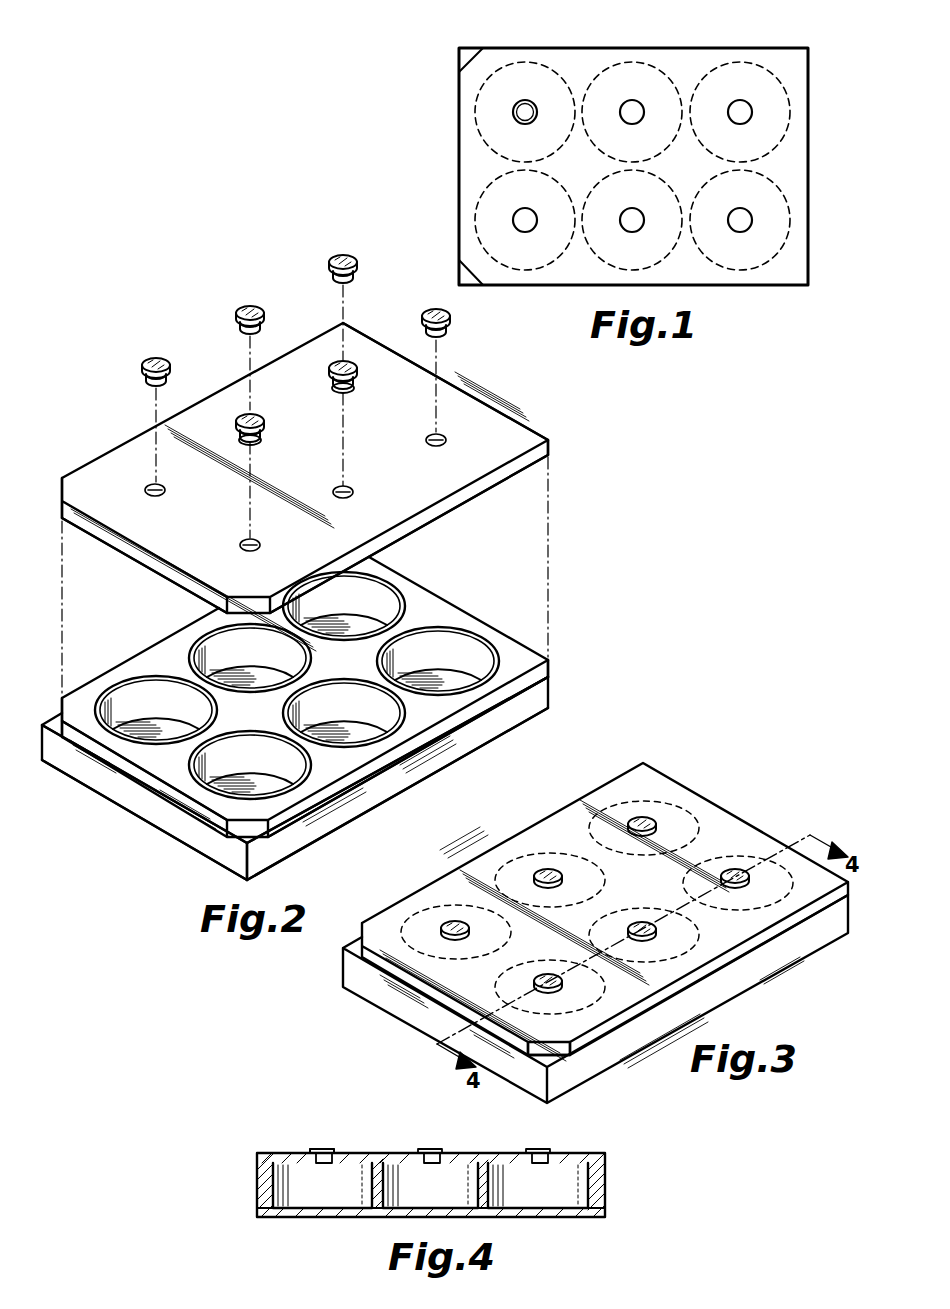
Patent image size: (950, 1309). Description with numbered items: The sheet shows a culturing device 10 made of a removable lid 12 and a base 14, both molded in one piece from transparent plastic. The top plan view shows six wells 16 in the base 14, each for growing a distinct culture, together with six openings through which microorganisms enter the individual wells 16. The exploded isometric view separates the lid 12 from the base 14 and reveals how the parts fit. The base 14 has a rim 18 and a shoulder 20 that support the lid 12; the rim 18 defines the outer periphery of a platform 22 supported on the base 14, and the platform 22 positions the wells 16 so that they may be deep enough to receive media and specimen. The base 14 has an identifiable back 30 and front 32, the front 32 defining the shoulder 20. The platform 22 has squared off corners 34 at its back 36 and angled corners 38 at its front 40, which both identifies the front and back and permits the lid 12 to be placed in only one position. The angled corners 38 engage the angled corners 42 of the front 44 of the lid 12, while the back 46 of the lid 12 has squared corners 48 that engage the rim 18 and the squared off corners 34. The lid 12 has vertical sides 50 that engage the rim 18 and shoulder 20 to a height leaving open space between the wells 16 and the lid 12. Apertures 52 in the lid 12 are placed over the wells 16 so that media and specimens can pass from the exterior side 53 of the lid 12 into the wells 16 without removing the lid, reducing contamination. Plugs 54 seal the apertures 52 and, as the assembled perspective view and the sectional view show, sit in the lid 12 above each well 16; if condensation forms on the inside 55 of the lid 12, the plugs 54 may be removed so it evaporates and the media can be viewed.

In FIG. 1, the device 10 is at (506, 30).
In FIG. 2, the removable lid 12 is at (470, 385).
In FIG. 3, the removable lid 12 is at (713, 800).
In FIG. 2, the base 14 is at (552, 708).
In FIG. 3, the base 14 is at (595, 999).
In FIG. 4, the base 14 is at (548, 1218).
In FIG. 1, the wells 16 is at (808, 262).
In FIG. 2, the wells 16 is at (474, 658).
In FIG. 4, the wells 16 is at (575, 1192).
In FIG. 2, the rim 18 is at (335, 828).
In FIG. 2, the shoulder 20 is at (242, 840).
In FIG. 2, the platform 22 is at (387, 758).
In FIG. 2, the back 30 is at (552, 686).
In FIG. 2, the front 32 is at (167, 825).
In FIG. 2, the squared off corners 34 is at (552, 662).
In FIG. 2, the back 36 is at (456, 603).
In FIG. 2, the angled corners 38 is at (58, 722).
In FIG. 3, the angled corners 38 is at (550, 1050).
In FIG. 2, the front 40 is at (137, 777).
In FIG. 2, the angled corners 42 is at (58, 490).
In FIG. 2, the front 44 is at (142, 560).
In FIG. 2, the back 46 is at (510, 415).
In FIG. 2, the squared corners 48 is at (552, 443).
In FIG. 2, the vertical sides 50 is at (505, 478).
In FIG. 2, the apertures 52 is at (152, 484).
In FIG. 3, the exterior side 53 is at (755, 925).
In FIG. 2, the plugs 54 is at (452, 320).
In FIG. 3, the plugs 54 is at (595, 905).
In FIG. 4, the plugs 54 is at (321, 1149).
In FIG. 4, the inside 55 is at (477, 1153).